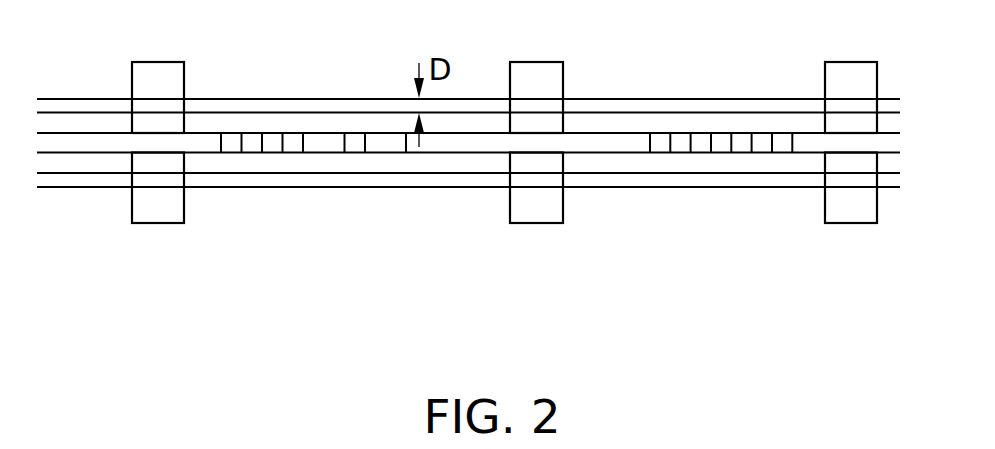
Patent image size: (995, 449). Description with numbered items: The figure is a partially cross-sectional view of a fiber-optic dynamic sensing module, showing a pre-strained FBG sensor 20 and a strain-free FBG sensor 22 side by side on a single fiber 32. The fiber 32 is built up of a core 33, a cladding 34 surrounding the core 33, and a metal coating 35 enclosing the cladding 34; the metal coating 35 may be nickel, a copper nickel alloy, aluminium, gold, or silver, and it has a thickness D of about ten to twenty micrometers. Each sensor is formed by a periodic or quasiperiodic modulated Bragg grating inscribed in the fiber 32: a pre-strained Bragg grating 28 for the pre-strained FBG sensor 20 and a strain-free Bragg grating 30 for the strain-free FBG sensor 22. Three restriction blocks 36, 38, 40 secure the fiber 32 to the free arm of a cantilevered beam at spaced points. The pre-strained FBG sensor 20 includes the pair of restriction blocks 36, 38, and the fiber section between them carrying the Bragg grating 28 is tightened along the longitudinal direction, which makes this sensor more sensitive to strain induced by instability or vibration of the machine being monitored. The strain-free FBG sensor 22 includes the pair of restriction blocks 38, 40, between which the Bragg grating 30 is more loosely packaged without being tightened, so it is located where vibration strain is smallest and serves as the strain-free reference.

The pre-strained FBG sensor 20 is at (318, 142).
The strain-free FBG sensor 22 is at (720, 143).
The pre-strained Bragg grating 28 is at (288, 132).
The strain-free Bragg grating 30 is at (682, 142).
The fiber 32 is at (445, 143).
The core 33 is at (613, 143).
The cladding 34 is at (238, 163).
The metal coating 35 is at (323, 103).
The restriction block 36 is at (153, 217).
The restriction block 38 is at (537, 223).
The restriction block 40 is at (848, 223).